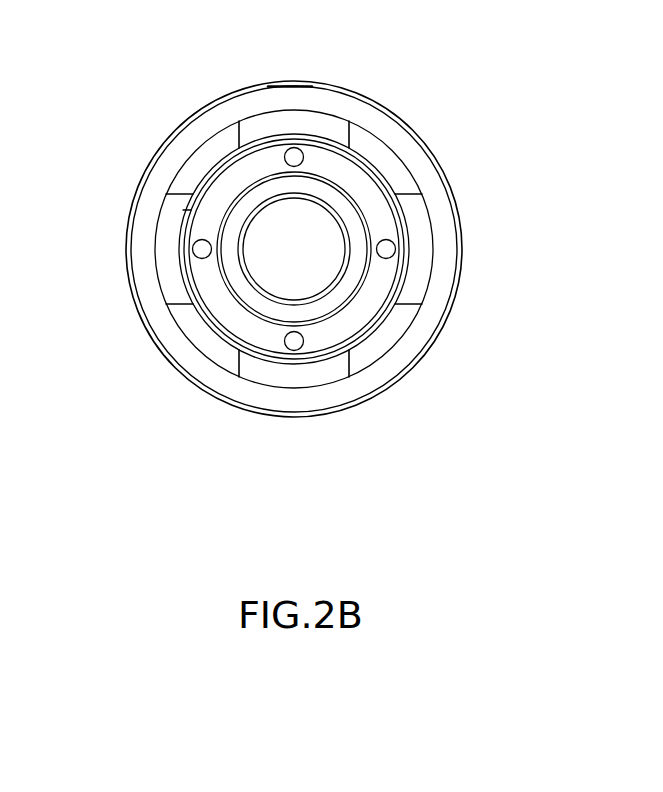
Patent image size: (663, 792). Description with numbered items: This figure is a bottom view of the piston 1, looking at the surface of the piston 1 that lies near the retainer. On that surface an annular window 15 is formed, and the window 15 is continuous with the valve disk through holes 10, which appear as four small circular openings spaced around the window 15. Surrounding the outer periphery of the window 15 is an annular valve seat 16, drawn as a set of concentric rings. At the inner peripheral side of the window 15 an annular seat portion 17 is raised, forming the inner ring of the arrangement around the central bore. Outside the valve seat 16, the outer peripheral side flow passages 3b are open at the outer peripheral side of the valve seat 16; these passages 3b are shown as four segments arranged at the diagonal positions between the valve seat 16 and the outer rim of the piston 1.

The piston 1 is at (466, 177).
The annular window 15 is at (259, 116).
The outer peripheral side flow passages 3b is at (203, 158).
The annular valve seat 16 is at (187, 210).
The valve disk through holes 10 is at (293, 148).
The annular seat portion 17 is at (237, 288).